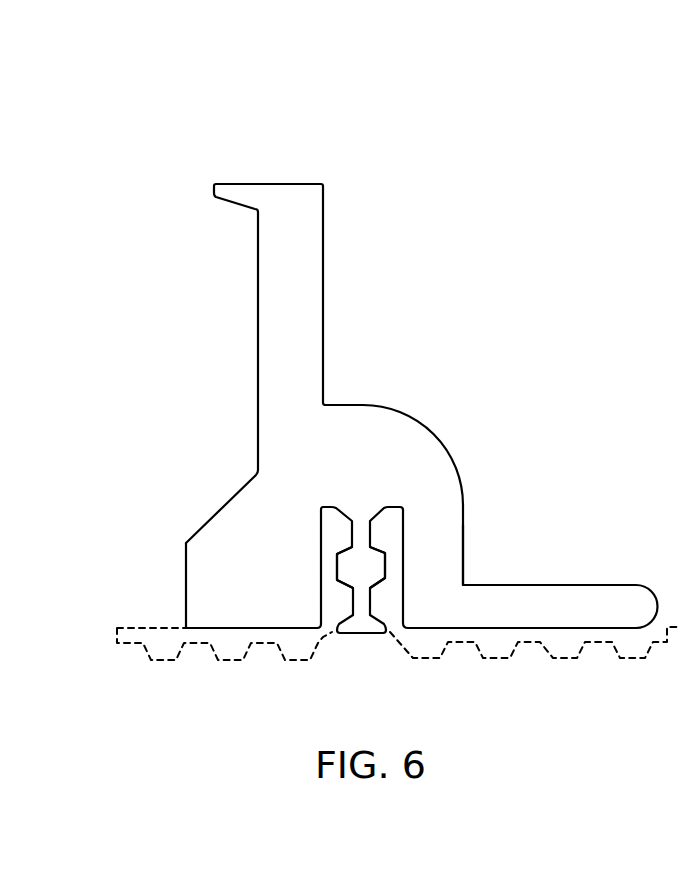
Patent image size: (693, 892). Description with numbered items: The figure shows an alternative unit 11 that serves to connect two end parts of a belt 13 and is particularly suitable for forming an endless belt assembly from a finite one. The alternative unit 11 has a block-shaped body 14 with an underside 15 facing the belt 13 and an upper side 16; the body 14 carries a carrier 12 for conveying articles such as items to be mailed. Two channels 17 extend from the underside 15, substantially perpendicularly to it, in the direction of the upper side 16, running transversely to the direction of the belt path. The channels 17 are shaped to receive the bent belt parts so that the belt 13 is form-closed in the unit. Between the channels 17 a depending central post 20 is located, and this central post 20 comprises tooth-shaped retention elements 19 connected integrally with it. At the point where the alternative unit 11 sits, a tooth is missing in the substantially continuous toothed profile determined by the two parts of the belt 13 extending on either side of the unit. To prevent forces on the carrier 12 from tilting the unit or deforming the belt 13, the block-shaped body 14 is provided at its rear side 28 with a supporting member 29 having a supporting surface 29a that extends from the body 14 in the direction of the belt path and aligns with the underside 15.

The alternative unit 11 is at (368, 116).
The carrier 12 is at (293, 260).
The belt 13 is at (167, 647).
The block-shaped body 14 is at (382, 465).
The underside 15 is at (275, 630).
The upper side 16 is at (367, 402).
The channels 17 is at (333, 532).
The tooth-shaped retention elements 19 is at (348, 570).
The central post 20 is at (358, 603).
The rear side 28 is at (465, 535).
The supporting member 29 is at (580, 600).
The supporting surface 29a is at (562, 628).